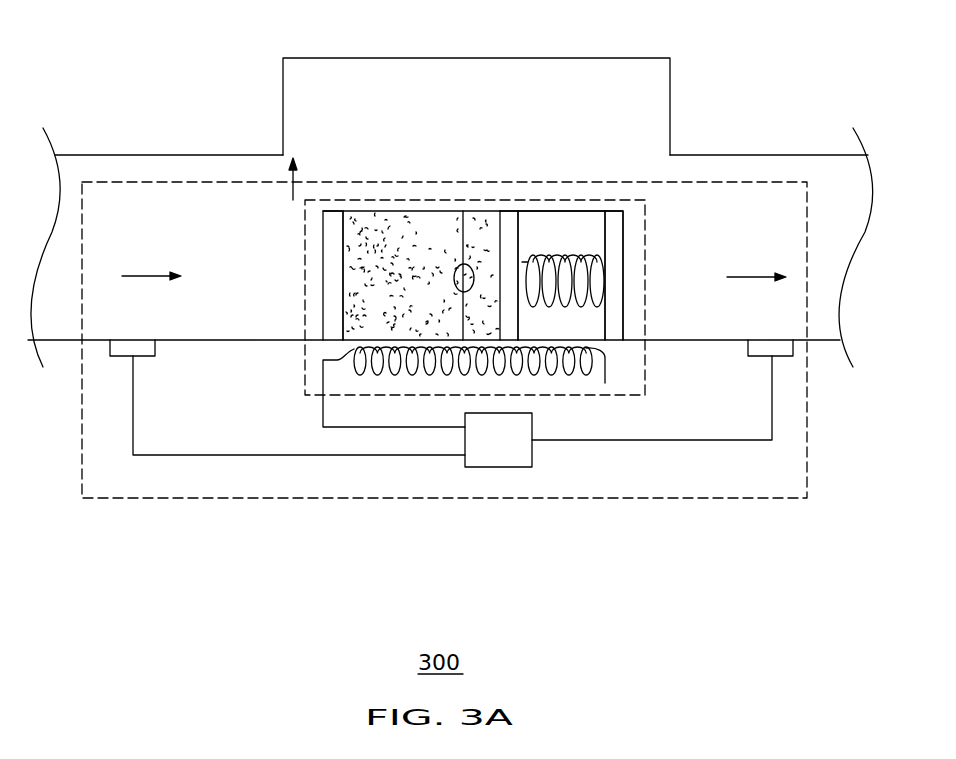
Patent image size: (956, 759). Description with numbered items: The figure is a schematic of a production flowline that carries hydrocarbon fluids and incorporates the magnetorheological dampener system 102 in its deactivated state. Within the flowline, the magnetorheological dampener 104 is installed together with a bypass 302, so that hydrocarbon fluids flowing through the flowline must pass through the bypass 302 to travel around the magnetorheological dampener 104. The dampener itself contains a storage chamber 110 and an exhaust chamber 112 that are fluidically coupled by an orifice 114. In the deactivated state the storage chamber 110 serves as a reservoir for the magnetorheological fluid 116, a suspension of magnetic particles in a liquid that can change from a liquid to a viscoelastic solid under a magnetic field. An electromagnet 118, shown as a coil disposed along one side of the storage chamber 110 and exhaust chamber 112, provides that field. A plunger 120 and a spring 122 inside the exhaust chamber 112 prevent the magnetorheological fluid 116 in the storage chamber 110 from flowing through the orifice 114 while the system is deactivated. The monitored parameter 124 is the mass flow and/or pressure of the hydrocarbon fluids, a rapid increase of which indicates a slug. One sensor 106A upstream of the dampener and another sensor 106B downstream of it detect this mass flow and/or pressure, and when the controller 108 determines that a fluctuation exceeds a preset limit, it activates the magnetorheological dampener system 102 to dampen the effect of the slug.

The bypass 302 is at (368, 58).
The magnetorheological dampener system 102 is at (180, 498).
The magnetorheological dampener 104 is at (645, 318).
The sensor 106A is at (140, 358).
The sensor 106B is at (757, 358).
The controller 108 is at (532, 465).
The storage chamber 110 is at (412, 211).
The exhaust chamber 112 is at (486, 211).
The orifice 114 is at (454, 279).
The magnetorheological fluid 116 is at (373, 243).
The electromagnet 118 is at (533, 363).
The plunger 120 is at (613, 211).
The spring 122 is at (542, 255).
The parameter 124 is at (292, 188).